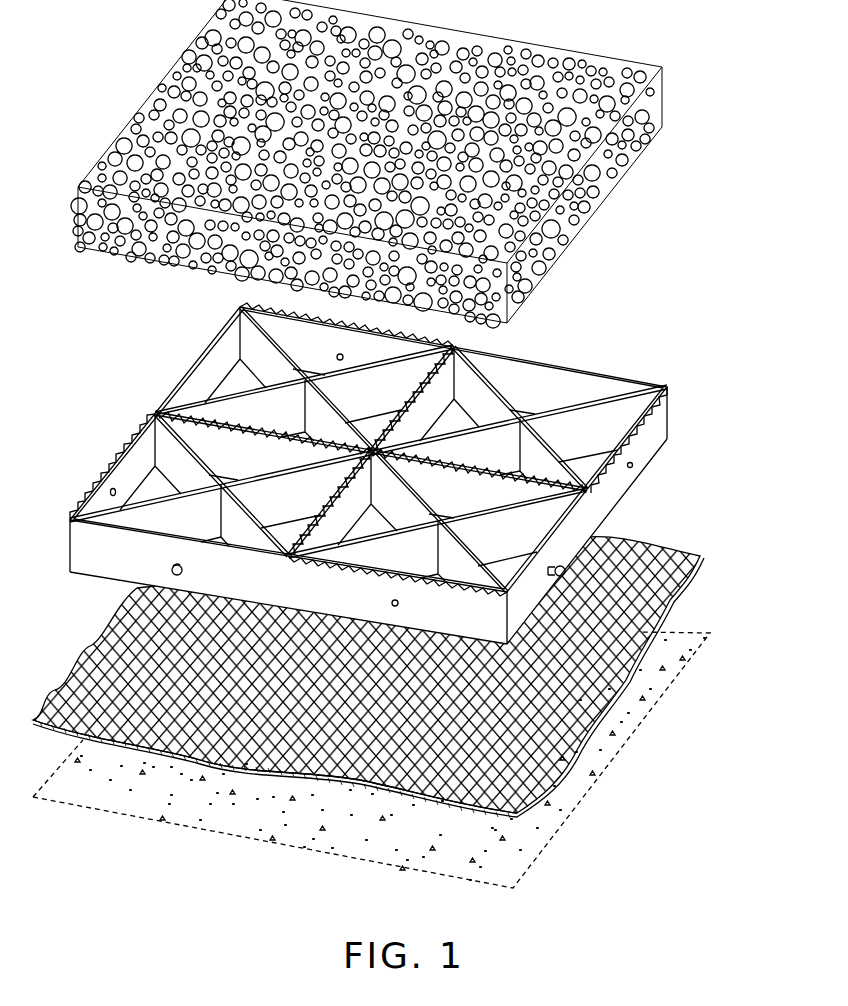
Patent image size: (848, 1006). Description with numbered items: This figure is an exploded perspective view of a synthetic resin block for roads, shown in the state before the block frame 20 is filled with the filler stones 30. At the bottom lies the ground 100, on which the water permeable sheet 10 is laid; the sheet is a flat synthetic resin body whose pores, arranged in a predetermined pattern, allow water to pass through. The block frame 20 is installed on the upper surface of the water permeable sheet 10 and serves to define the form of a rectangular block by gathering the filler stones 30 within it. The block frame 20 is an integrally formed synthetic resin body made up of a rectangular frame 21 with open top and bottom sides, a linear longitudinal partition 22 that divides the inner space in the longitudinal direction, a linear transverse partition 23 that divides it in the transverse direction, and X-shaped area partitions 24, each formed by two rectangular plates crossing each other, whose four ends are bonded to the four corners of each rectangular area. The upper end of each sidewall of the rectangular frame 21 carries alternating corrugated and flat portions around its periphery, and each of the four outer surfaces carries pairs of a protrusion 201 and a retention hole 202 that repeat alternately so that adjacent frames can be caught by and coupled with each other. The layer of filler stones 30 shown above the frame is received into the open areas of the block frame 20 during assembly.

The water permeable sheet 10 is at (700, 556).
The block frame 20 is at (401, 473).
The rectangular frame 21 is at (663, 417).
The longitudinal partition 22 is at (580, 469).
The transverse partition 23 is at (490, 348).
The area partition 24 is at (625, 388).
The filler stones 30 is at (605, 163).
The ground 100 is at (670, 690).
The protrusion 201 is at (172, 571).
The retention hole 202 is at (111, 489).